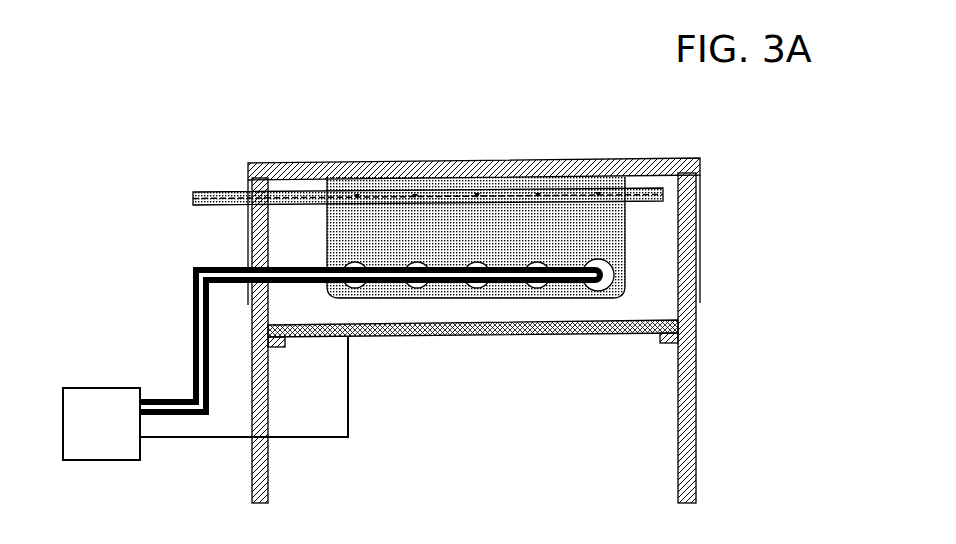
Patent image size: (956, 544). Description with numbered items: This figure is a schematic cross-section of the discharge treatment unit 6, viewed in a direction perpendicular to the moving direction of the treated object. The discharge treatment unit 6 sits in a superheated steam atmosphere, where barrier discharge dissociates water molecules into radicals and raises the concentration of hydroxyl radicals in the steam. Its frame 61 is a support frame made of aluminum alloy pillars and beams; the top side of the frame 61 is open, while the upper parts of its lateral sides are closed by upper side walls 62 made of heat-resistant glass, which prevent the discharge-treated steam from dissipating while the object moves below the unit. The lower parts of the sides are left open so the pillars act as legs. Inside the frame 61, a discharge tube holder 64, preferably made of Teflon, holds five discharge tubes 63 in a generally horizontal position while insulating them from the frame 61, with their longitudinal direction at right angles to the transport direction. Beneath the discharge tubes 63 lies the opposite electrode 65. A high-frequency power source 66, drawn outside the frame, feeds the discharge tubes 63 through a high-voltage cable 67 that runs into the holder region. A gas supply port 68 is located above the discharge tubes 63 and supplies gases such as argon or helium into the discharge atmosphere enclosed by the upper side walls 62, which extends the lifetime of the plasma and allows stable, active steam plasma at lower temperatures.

The discharge treatment unit 6 is at (459, 97).
The frame 61 is at (484, 160).
The upper side walls 62 is at (252, 161).
The discharge tubes 63 is at (595, 292).
The discharge tube holder 64 is at (613, 245).
The opposite electrode 65 is at (622, 334).
The high-frequency power source 66 is at (84, 388).
The high-voltage cable 67 is at (218, 268).
The gas supply port 68 is at (228, 192).